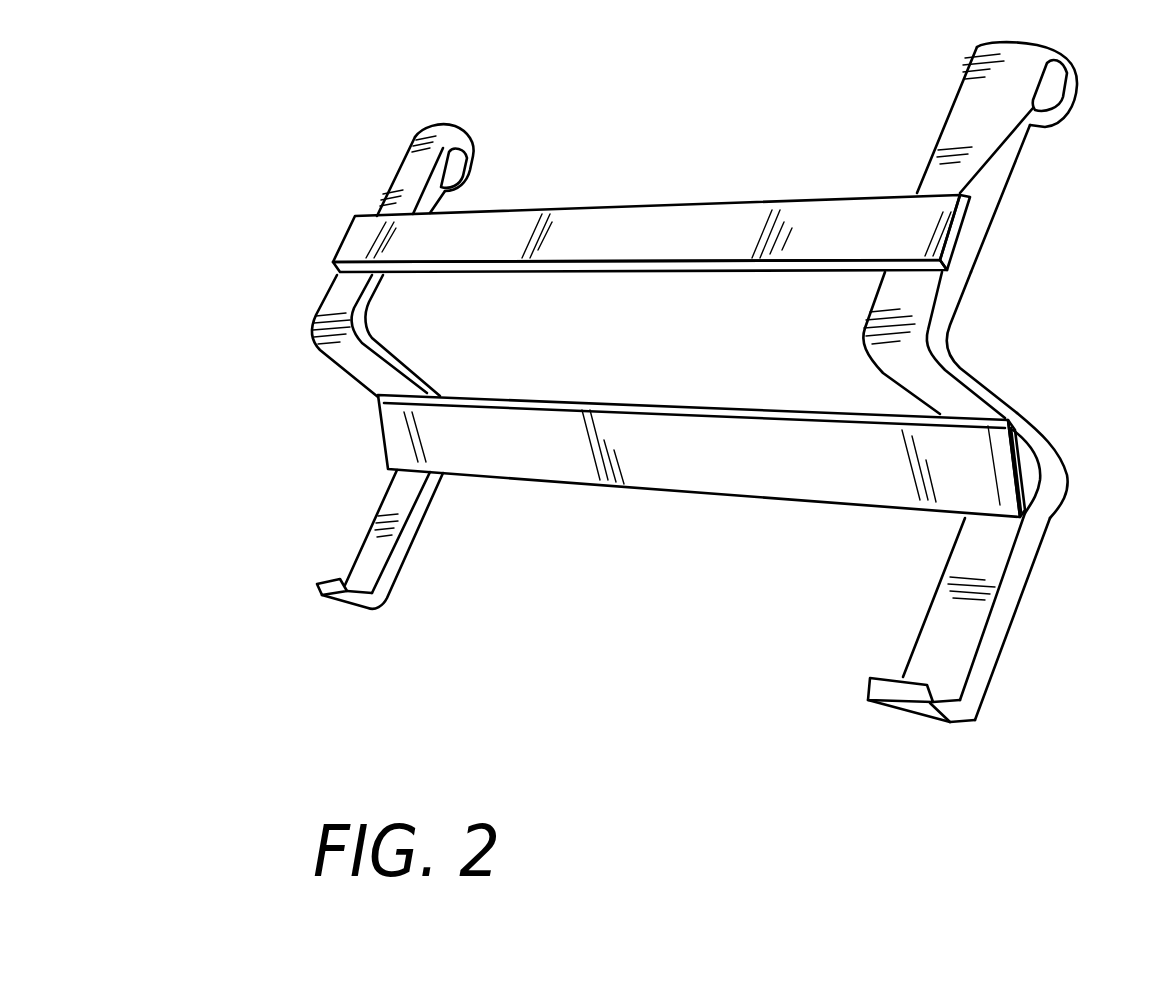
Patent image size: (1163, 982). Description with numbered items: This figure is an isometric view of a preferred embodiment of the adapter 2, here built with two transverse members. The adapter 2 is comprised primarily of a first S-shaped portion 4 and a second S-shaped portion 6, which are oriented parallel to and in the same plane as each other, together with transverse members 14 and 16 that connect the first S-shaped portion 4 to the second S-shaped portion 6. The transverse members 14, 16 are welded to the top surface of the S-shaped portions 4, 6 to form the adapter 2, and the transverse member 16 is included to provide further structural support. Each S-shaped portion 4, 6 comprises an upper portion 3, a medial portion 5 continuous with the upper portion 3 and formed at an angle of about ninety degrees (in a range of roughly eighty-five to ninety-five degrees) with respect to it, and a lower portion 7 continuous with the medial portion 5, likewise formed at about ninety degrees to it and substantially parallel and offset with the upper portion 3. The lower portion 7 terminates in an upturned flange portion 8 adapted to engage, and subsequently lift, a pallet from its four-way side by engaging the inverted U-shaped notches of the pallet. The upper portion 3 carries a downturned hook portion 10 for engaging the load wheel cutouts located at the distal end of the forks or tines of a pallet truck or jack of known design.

The adapter 2 is at (268, 179).
The upper portion 3 is at (1007, 176).
The first S-shaped portion 4 is at (368, 312).
The medial portion 5 is at (983, 381).
The second S-shaped portion 6 is at (963, 297).
The lower portion 7 is at (1017, 613).
The upturned flange portion 8 is at (318, 578).
The downturned hook portion 10 is at (473, 157).
The transverse member 14 is at (640, 490).
The transverse member 16 is at (633, 207).